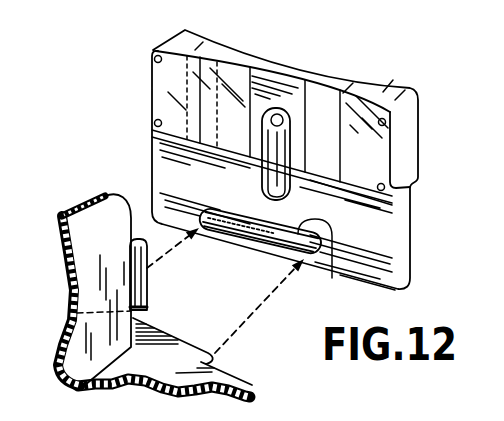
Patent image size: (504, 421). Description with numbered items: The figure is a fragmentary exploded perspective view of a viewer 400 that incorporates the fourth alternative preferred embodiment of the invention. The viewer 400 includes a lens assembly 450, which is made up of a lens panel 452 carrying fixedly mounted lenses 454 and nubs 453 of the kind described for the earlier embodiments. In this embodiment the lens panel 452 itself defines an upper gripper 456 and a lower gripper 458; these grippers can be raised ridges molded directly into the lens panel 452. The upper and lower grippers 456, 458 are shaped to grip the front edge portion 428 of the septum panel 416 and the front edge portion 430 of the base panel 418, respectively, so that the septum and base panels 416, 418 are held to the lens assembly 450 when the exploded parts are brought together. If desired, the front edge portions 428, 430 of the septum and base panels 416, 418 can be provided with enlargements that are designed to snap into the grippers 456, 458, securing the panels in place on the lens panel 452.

The viewer 400 is at (124, 161).
The septum panel 416 is at (118, 243).
The base panel 418 is at (182, 368).
The front edge portion 428 is at (148, 310).
The front edge portion 430 is at (227, 383).
The lens assembly 450 is at (288, 54).
The lens panel 452 is at (410, 247).
The nubs 453 is at (388, 122).
The lenses 454 is at (152, 89).
The upper gripper 456 is at (260, 168).
The lower gripper 458 is at (327, 262).